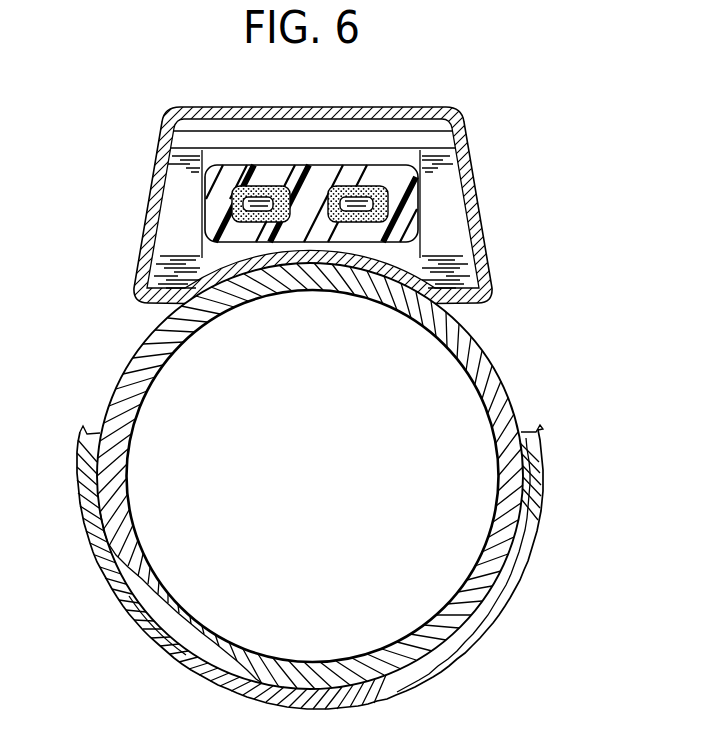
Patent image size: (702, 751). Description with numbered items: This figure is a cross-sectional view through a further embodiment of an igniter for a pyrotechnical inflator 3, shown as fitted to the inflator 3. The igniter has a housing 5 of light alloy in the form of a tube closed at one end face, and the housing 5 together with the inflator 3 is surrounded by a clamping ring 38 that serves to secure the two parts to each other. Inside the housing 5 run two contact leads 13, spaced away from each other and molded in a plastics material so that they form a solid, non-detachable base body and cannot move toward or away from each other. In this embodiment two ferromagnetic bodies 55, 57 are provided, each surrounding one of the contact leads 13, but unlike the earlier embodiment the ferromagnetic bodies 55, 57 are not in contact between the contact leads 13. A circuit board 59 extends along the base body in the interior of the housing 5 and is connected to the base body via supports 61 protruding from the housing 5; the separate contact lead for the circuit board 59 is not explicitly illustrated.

The pyrotechnical inflator 3 is at (500, 547).
The housing 5 is at (492, 269).
The contact leads 13 is at (232, 194).
The clamping ring 38 is at (530, 487).
The ferromagnetic body 55 is at (388, 212).
The ferromagnetic body 57 is at (243, 206).
The circuit board 59 is at (392, 140).
The supports 61 is at (167, 252).